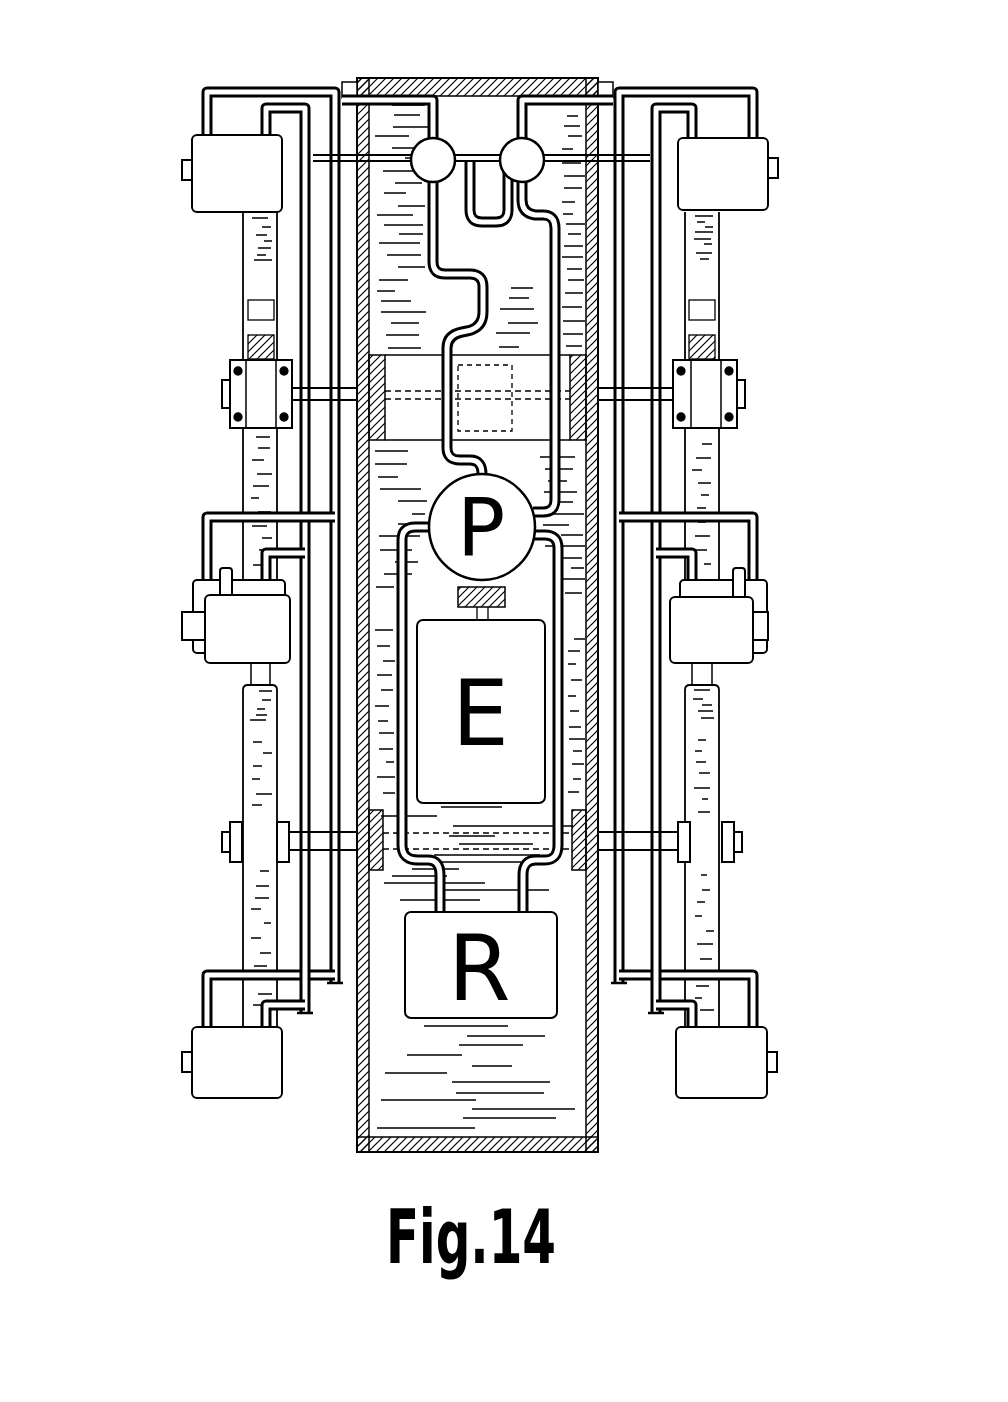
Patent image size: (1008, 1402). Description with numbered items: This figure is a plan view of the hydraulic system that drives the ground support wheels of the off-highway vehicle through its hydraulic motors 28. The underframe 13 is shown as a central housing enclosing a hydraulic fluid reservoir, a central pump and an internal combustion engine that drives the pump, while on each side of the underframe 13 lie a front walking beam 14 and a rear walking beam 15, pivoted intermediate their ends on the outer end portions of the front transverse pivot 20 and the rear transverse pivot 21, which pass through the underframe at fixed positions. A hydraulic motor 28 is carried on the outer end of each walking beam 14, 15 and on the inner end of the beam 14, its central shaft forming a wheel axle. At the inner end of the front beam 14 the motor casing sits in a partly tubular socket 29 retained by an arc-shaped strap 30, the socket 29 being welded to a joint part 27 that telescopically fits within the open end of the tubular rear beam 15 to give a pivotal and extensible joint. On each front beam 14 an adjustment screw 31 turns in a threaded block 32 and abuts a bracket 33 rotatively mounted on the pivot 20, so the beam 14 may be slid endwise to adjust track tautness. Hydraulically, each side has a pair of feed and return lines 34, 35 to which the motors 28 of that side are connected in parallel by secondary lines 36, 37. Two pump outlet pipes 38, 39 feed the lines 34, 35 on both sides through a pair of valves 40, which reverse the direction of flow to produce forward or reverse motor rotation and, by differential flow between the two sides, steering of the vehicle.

The underframe 13 is at (612, 1097).
The front walking beam 14 is at (727, 462).
The rear walking beam 15 is at (262, 897).
The front transverse pivot 20 is at (283, 330).
The rear transverse pivot 21 is at (293, 822).
The joint part 27 is at (712, 674).
The hydraulic motor 28 is at (190, 158).
The socket 29 is at (205, 630).
The strap 30 is at (770, 600).
The adjustment screw 31 is at (720, 312).
The threaded block 32 is at (725, 340).
The bracket 33 is at (737, 378).
The feed and return line 34 is at (230, 380).
The feed and return line 35 is at (330, 262).
The secondary line 36 is at (265, 110).
The secondary line 37 is at (240, 85).
The pump outlet pipe 38 is at (385, 300).
The pump outlet pipe 39 is at (488, 322).
The valve 40 is at (440, 140).